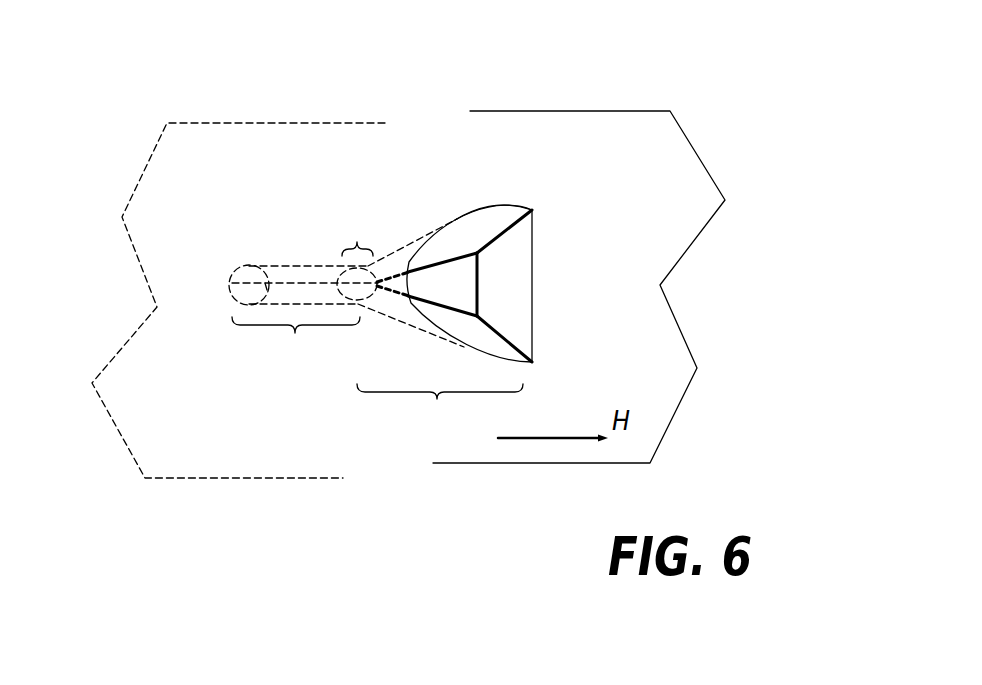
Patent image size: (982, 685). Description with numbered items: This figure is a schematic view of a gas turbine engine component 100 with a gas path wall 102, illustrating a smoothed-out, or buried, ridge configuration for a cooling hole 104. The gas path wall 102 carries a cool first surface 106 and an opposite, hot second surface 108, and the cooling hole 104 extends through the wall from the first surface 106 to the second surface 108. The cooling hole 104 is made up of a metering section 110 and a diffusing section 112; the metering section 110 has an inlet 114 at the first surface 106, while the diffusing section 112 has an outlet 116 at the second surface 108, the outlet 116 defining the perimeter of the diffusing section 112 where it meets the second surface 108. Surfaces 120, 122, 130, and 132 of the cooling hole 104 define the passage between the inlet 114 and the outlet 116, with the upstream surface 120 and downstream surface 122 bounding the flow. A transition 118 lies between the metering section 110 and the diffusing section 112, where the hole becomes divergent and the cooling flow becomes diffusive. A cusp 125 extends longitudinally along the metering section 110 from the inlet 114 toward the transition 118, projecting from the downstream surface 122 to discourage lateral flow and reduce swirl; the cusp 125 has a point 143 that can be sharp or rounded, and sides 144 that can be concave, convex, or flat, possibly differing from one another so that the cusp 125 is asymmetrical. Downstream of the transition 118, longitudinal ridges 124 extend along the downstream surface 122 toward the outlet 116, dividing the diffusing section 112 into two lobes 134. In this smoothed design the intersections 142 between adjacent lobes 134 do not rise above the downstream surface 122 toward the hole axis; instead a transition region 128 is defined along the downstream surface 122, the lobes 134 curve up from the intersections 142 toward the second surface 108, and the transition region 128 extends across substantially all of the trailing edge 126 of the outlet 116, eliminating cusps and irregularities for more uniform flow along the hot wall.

The gas turbine engine component 100 is at (176, 71).
The gas path wall 102 is at (410, 453).
The cooling hole 104 is at (268, 398).
The first surface 106 is at (140, 185).
The second surface 108 is at (707, 165).
The metering section 110 is at (300, 315).
The diffusing section 112 is at (440, 408).
The inlet 114 is at (238, 267).
The outlet 116 is at (508, 200).
The transition 118 is at (361, 255).
The upstream surface 120 is at (418, 255).
The downstream surface 122 is at (468, 297).
The longitudinal ridge 124 is at (440, 258).
The cusp 125 is at (312, 282).
The trailing edge 126 is at (533, 243).
The transition region 128 is at (527, 279).
The surface of cooling hole 130 is at (293, 263).
The surface of cooling hole 132 is at (262, 304).
The lobe 134 is at (507, 213).
The intersection 142 is at (498, 332).
The point 143 is at (267, 282).
The side 144 is at (265, 283).